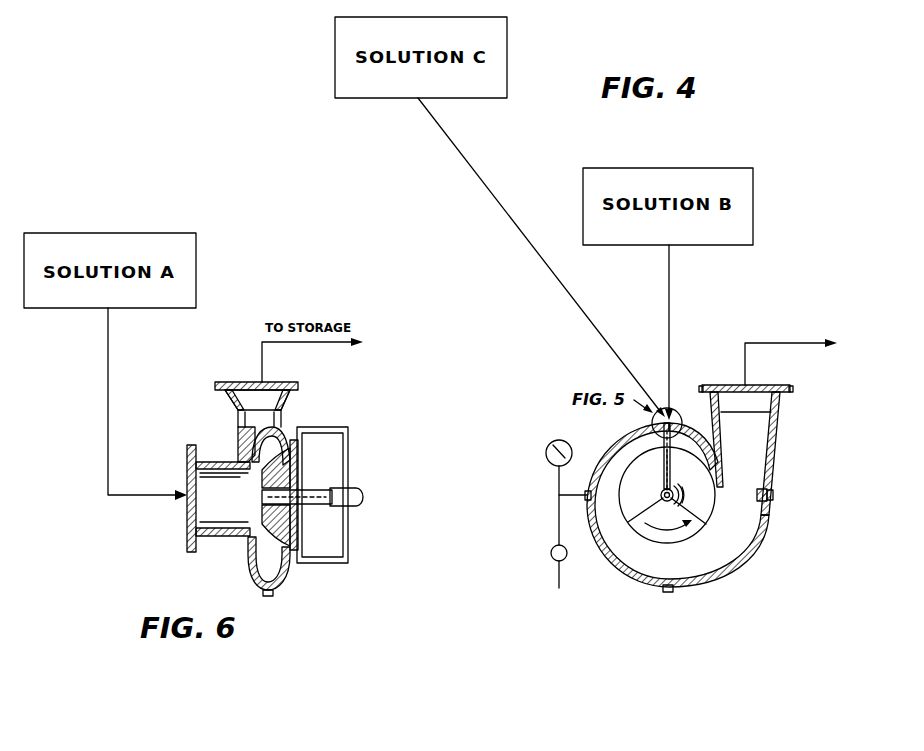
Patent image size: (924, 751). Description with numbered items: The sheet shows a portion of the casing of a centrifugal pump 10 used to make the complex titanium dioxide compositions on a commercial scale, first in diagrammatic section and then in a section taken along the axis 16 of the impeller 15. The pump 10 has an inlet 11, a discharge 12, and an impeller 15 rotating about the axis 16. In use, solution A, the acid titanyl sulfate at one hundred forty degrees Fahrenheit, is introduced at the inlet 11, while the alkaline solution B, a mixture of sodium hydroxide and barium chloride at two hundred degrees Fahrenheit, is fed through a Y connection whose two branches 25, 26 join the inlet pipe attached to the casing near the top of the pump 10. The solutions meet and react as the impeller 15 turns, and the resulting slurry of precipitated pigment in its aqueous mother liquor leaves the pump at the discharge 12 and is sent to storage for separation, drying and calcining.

In FIG. 4, the centrifugal pump 10 is at (628, 575).
In FIG. 6, the inlet 11 is at (193, 517).
In FIG. 4, the discharge 12 is at (733, 385).
In FIG. 6, the discharge 12 is at (237, 382).
In FIG. 4, the impeller 15 is at (690, 532).
In FIG. 6, the impeller 15 is at (253, 545).
In FIG. 4, the axis 16 is at (662, 491).
In FIG. 6, the axis 16 is at (318, 505).
In FIG. 4, the branch 25 is at (568, 290).
In FIG. 4, the branch 26 is at (670, 287).